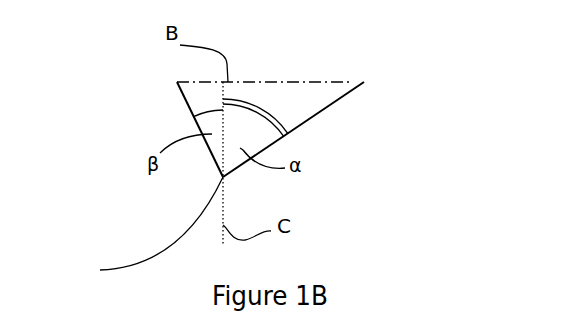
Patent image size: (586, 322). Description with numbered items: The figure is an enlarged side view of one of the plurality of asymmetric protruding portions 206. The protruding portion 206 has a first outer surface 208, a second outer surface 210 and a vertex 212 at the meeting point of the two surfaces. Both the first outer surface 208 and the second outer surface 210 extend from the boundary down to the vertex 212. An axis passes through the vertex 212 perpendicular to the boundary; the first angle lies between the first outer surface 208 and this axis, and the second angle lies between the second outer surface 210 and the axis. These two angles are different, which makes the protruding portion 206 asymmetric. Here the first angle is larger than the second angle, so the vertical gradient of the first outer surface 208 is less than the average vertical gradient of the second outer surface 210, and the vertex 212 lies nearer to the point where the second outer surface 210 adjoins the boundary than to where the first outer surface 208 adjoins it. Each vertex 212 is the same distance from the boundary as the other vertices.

The protruding portion 206 is at (325, 147).
The first outer surface 208 is at (334, 112).
The second outer surface 210 is at (185, 105).
The vertex 212 is at (139, 230).